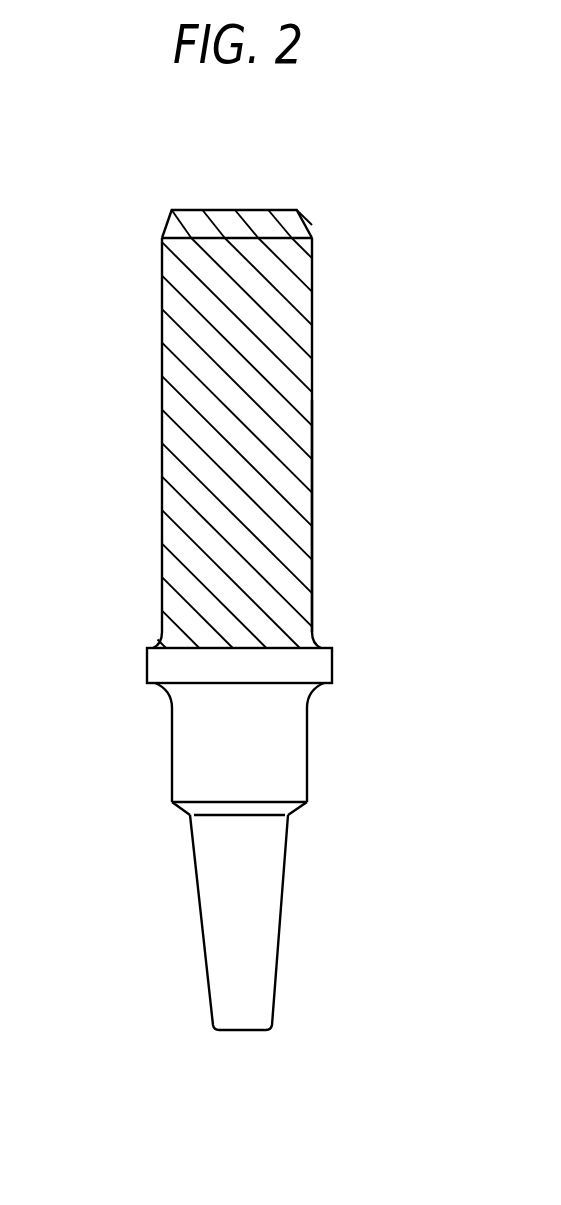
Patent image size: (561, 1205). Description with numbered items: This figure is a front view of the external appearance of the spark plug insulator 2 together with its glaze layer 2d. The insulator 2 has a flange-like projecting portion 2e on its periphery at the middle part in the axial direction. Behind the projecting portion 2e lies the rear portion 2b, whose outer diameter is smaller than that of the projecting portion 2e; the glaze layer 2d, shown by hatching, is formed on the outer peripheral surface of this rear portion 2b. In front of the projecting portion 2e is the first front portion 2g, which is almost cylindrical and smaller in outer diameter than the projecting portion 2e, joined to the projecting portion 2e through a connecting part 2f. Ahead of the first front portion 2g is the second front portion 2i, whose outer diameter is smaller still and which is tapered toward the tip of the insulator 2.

The insulator 2 is at (252, 620).
The rear portion 2b is at (305, 435).
The glaze layer 2d is at (305, 567).
The projecting portion 2e is at (323, 665).
The connecting part 2f is at (230, 856).
The first front portion 2g is at (308, 743).
The second front portion 2i is at (272, 910).